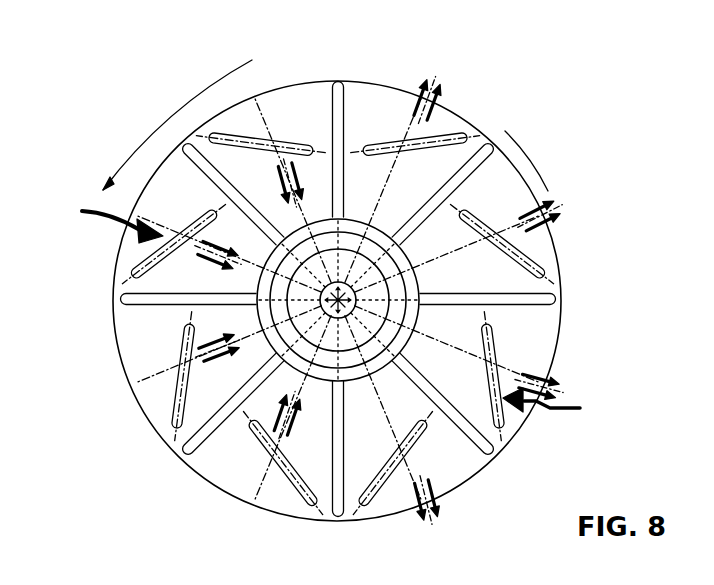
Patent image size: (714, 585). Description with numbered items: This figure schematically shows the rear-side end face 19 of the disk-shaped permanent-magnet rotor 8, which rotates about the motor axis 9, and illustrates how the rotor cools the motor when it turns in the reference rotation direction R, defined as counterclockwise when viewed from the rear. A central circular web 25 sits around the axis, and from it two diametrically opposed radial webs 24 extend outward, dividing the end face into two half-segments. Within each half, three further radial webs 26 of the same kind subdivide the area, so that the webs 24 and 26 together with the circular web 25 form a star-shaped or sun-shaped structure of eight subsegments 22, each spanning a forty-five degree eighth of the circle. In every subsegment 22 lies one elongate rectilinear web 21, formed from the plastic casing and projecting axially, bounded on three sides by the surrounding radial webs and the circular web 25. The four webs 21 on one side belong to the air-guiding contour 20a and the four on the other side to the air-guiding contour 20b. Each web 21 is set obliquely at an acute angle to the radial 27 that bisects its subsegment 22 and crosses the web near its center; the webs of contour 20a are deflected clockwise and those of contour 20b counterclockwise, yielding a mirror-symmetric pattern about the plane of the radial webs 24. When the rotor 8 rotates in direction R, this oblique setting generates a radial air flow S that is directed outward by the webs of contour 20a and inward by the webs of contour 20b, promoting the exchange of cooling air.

The permanent-magnet rotor 8 is at (560, 320).
The motor axis 9 is at (338, 300).
The rear-side end face 19 is at (522, 171).
The air-guiding contour 20a is at (565, 406).
The air-guiding contour 20b is at (103, 213).
The web 21 is at (288, 138).
The subsegment 22 is at (188, 172).
The radial web 24 is at (344, 82).
The central circular web 25 is at (278, 357).
The radial web 26 is at (186, 150).
The radial 27 is at (172, 236).
The reference rotation direction R is at (173, 105).
The radial air flow S is at (525, 371).